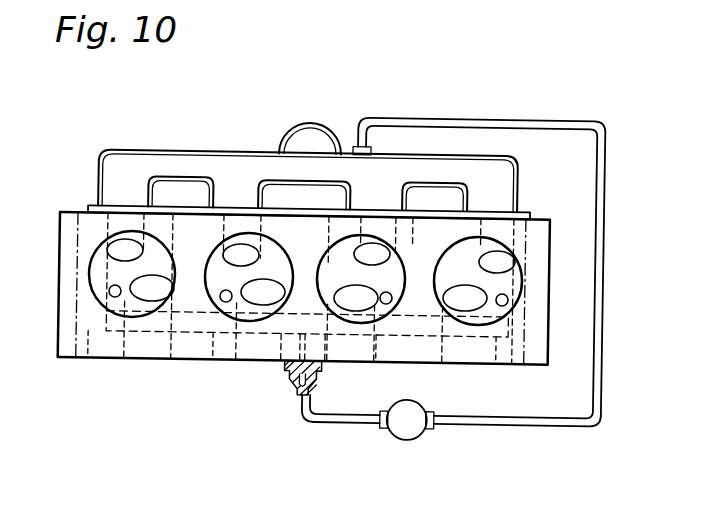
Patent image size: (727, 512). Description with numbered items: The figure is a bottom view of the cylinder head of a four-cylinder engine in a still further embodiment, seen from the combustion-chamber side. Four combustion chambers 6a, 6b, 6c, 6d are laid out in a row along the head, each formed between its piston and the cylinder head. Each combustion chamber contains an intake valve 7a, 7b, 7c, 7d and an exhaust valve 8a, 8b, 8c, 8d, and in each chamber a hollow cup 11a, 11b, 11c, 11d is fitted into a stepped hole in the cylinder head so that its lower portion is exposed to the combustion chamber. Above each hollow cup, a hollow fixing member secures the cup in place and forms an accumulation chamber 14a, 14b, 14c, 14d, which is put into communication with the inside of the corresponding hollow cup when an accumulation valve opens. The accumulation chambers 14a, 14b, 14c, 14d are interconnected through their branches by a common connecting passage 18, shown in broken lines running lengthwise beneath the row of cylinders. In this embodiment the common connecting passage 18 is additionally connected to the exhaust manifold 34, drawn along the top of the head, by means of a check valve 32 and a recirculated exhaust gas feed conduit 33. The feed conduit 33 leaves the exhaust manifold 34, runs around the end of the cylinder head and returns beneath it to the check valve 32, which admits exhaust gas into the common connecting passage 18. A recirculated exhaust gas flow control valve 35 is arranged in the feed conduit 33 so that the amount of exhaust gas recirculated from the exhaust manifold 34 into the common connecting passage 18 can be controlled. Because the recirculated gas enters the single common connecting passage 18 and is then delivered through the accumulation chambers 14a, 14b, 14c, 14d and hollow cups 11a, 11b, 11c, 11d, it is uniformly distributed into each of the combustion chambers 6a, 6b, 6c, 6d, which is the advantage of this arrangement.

The combustion chamber 6a is at (100, 280).
The combustion chamber 6b is at (278, 262).
The combustion chamber 6c is at (361, 279).
The combustion chamber 6d is at (518, 303).
The intake valve 7a is at (152, 288).
The intake valve 7b is at (263, 292).
The intake valve 7c is at (356, 310).
The intake valve 7d is at (458, 297).
The exhaust valve 8a is at (117, 253).
The exhaust valve 8b is at (240, 252).
The exhaust valve 8c is at (372, 252).
The exhaust valve 8d is at (497, 263).
The hollow cup 11a is at (113, 294).
The hollow cup 11b is at (224, 302).
The hollow cup 11c is at (389, 296).
The hollow cup 11d is at (505, 299).
The accumulation chamber 14a is at (86, 352).
The accumulation chamber 14b is at (213, 353).
The accumulation chamber 14c is at (381, 365).
The accumulation chamber 14d is at (501, 366).
The common connecting passage 18 is at (276, 348).
The check valve 32 is at (292, 405).
The recirculated exhaust gas feed conduit 33 is at (490, 428).
The exhaust manifold 34 is at (225, 166).
The recirculated exhaust gas flow control valve 35 is at (410, 430).